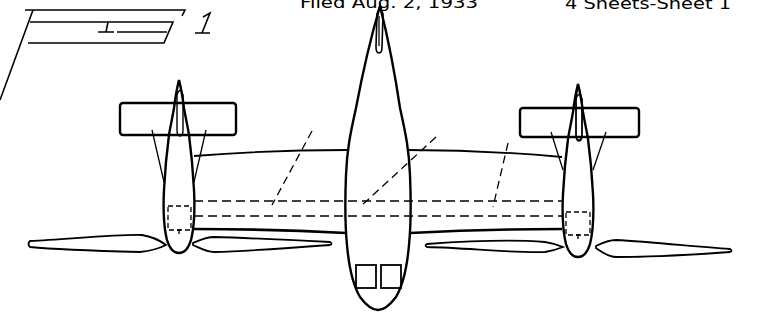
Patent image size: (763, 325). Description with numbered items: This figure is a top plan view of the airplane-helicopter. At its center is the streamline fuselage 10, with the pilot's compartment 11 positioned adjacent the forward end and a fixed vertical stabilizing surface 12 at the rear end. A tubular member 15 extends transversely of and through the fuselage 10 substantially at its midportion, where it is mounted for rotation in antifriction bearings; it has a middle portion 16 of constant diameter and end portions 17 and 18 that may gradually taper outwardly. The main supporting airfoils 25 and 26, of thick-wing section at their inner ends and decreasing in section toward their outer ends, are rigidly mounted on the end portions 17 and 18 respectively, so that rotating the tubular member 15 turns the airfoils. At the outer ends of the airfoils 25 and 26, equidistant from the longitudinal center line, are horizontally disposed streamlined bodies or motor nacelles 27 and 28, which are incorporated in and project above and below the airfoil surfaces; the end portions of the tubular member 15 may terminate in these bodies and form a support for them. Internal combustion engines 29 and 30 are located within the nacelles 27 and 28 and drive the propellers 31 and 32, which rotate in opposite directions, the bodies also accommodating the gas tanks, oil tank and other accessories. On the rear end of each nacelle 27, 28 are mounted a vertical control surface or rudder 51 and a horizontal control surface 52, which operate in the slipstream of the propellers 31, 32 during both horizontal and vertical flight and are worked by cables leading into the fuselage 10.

The fuselage 10 is at (392, 140).
The pilot's compartment 11 is at (401, 277).
The fixed vertical stabilizing surface 12 is at (378, 36).
The tubular member 15 is at (429, 201).
The middle portion 16 is at (409, 162).
The end portion 17 is at (303, 160).
The end portion 18 is at (506, 167).
The main supporting airfoil 25 is at (248, 163).
The main supporting airfoil 26 is at (483, 163).
The motor nacelle 27 is at (175, 189).
The motor nacelle 28 is at (586, 193).
The internal combustion engine 29 is at (165, 216).
The internal combustion engine 30 is at (595, 222).
The propeller 31 is at (128, 245).
The propeller 32 is at (631, 250).
The vertical control surface 51 is at (590, 110).
The horizontal control surface 52 is at (542, 118).